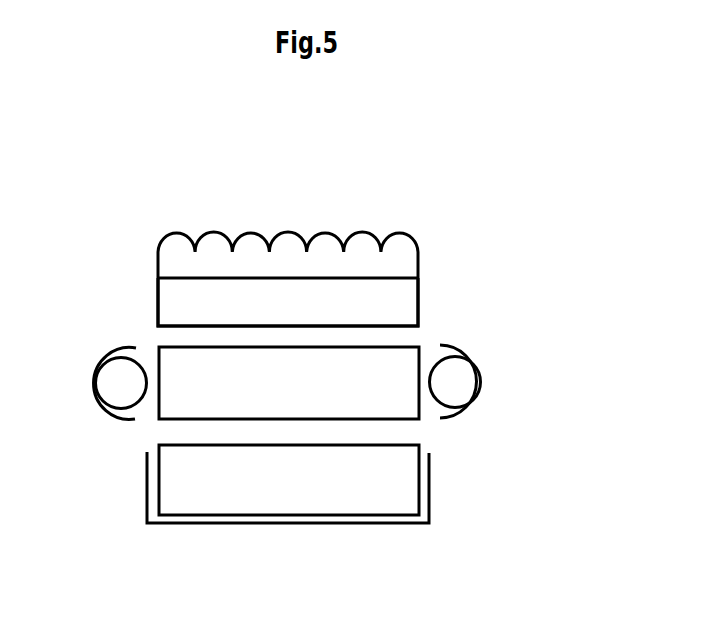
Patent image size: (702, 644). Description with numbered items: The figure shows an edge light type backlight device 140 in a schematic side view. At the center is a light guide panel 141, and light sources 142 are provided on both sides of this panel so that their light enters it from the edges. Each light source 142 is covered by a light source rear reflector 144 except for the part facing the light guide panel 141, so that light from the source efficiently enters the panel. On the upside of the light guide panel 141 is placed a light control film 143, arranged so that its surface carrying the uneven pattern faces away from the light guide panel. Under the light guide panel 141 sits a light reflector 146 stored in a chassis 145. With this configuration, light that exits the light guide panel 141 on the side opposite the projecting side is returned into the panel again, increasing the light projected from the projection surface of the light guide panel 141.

The backlight device 140 is at (475, 229).
The light guide panel 141 is at (410, 419).
The light source 142 is at (147, 405).
The light control film 143 is at (437, 253).
The light source rear reflector 144 is at (130, 348).
The chassis 145 is at (430, 515).
The light reflector 146 is at (418, 489).